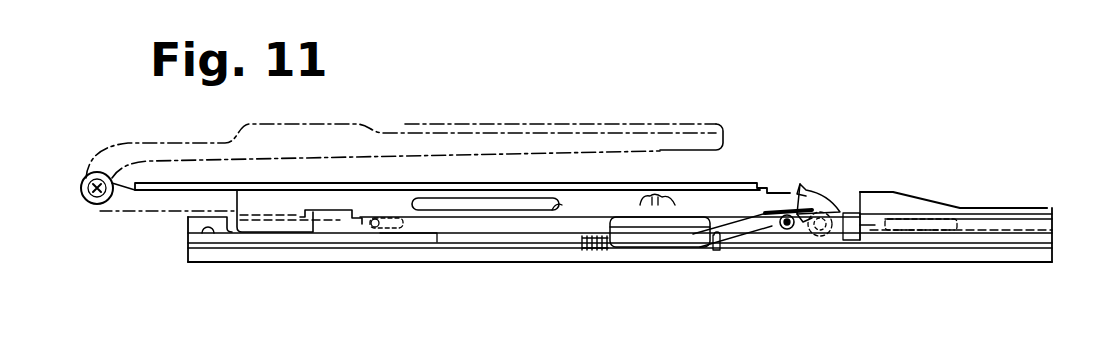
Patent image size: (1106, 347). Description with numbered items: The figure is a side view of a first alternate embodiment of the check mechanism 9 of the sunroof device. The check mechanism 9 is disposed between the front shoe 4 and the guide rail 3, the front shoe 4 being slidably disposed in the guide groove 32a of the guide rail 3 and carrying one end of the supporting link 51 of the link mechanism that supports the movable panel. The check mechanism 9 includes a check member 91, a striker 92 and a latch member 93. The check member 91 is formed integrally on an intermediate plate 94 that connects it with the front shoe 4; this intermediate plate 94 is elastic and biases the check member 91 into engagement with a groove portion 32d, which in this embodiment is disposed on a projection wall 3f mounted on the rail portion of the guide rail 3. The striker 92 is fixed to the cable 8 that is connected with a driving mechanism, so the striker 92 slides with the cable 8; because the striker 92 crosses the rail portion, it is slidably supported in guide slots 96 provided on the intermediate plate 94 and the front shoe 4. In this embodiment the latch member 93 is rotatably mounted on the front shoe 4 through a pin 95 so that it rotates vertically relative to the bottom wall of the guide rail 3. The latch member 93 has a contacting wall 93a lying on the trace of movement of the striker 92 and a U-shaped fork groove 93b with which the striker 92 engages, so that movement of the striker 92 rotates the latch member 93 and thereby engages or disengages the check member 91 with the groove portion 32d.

The supporting link 51 is at (468, 150).
The check mechanism 9 is at (757, 196).
The contacting wall 93a is at (795, 196).
The latch member 93 is at (828, 190).
The projection wall 3f is at (860, 212).
The guide groove 32a is at (214, 234).
The front shoe 4 is at (365, 203).
The intermediate plate 94 is at (530, 220).
The guide slots 96 is at (559, 211).
The cable 8 is at (608, 248).
The striker 92 is at (680, 228).
The groove portion 32d is at (785, 231).
The check member 91 is at (787, 230).
The fork groove 93b is at (801, 216).
The guide rail 3 is at (858, 251).
The pin 95 is at (862, 224).